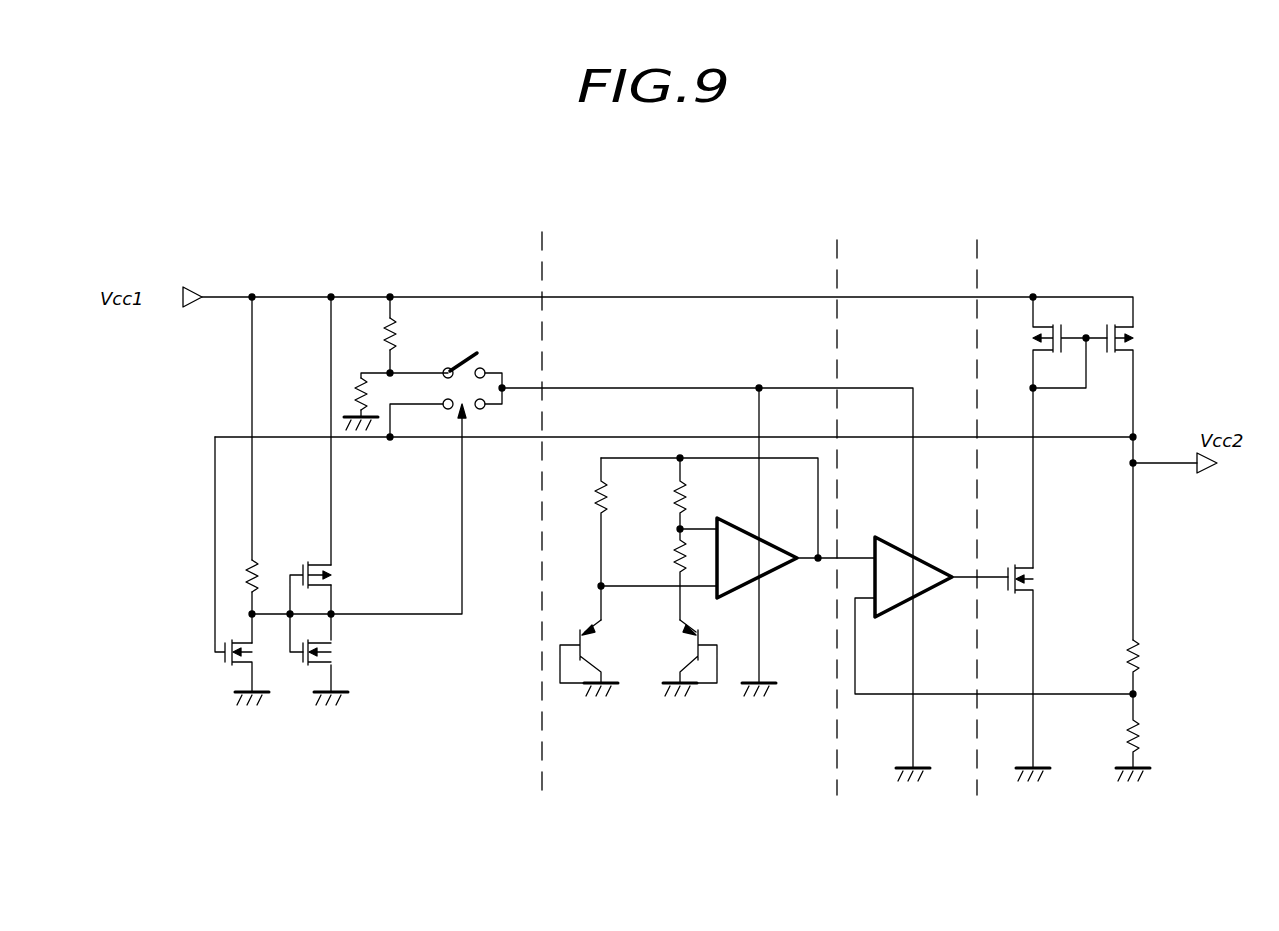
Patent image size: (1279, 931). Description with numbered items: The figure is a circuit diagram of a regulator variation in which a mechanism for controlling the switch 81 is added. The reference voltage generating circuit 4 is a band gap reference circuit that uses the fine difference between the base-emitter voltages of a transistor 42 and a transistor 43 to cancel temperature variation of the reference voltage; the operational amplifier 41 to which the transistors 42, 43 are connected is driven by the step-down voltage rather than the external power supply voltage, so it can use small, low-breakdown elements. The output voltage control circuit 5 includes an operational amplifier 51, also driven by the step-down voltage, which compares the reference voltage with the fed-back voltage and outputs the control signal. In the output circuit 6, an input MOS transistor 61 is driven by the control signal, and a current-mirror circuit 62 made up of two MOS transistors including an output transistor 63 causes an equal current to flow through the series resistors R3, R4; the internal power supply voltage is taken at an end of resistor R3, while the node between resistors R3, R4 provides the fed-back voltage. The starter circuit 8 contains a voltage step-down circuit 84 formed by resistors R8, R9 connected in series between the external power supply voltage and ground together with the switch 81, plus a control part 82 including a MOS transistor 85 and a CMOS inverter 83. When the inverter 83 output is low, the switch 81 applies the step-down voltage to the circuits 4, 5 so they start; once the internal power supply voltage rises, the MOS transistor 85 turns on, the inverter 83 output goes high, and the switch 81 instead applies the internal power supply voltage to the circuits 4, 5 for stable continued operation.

The reference voltage generating circuit 4 is at (667, 228).
The output voltage control circuit 5 is at (873, 238).
The output circuit 6 is at (1038, 242).
The starter circuit 8 is at (345, 222).
The operational amplifier 41 is at (780, 570).
The transistor 42 is at (581, 622).
The transistor 43 is at (690, 648).
The operational amplifier 51 is at (935, 590).
The input MOS transistor 61 is at (1040, 574).
The current-mirror circuit 62 is at (1098, 380).
The output transistor 63 is at (1142, 346).
The switch 81 is at (477, 352).
The control part 82 is at (234, 714).
The CMOS inverter 83 is at (311, 714).
The voltage step-down circuit 84 is at (342, 355).
The MOS transistor 85 is at (222, 665).
The resistor R3 is at (1157, 667).
The resistor R4 is at (1157, 731).
The resistor R8 is at (372, 332).
The resistor R9 is at (352, 398).